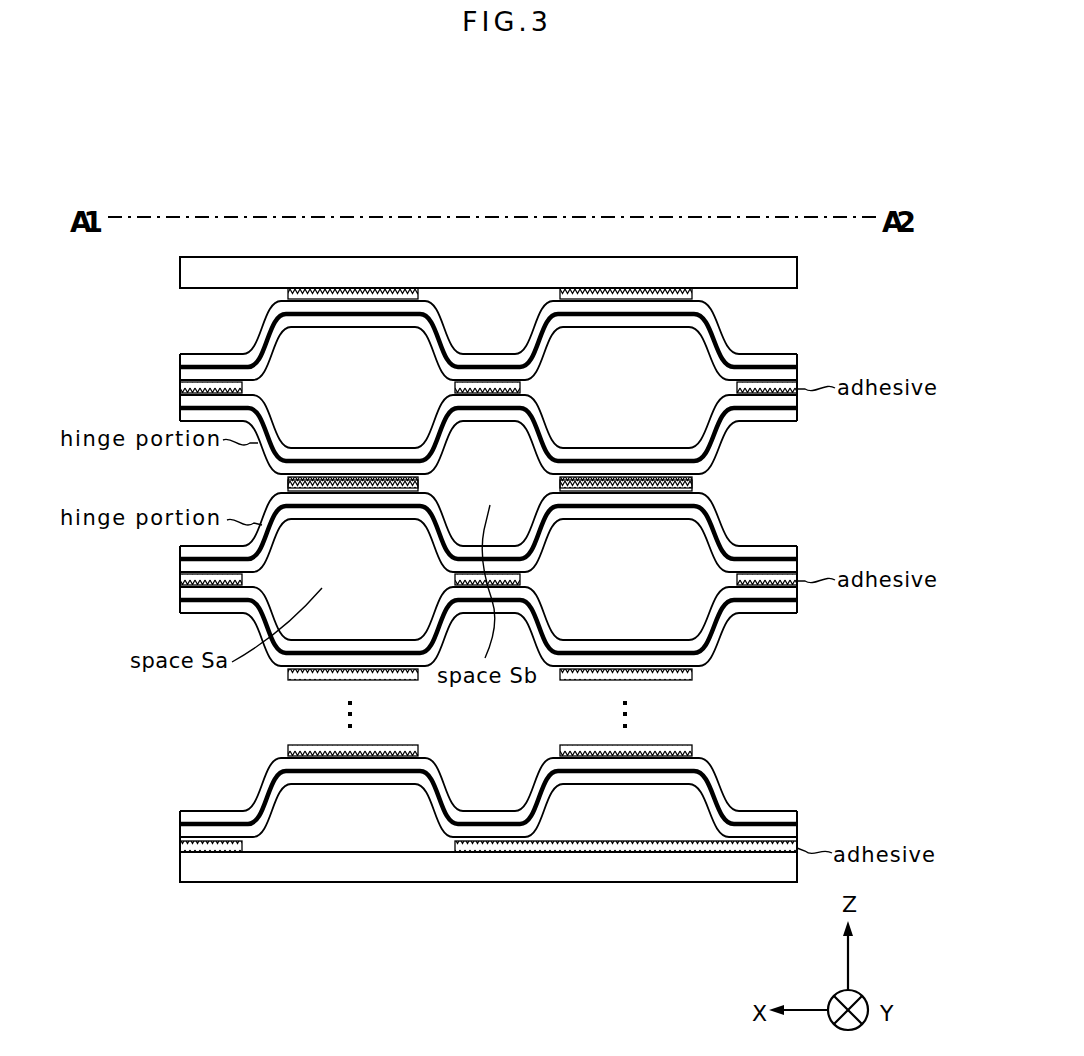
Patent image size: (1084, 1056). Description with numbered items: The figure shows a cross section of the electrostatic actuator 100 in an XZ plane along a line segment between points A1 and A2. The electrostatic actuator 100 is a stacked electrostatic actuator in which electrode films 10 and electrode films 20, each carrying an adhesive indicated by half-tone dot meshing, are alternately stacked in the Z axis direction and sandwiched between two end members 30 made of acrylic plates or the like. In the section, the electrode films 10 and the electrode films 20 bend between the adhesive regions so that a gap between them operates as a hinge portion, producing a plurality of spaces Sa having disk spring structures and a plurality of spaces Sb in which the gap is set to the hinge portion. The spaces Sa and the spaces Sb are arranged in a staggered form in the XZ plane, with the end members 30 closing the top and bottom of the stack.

The electrostatic actuator 100 is at (233, 120).
The electrode film 10 is at (821, 327).
The electrode film 20 is at (821, 450).
The end member 30 is at (190, 875).